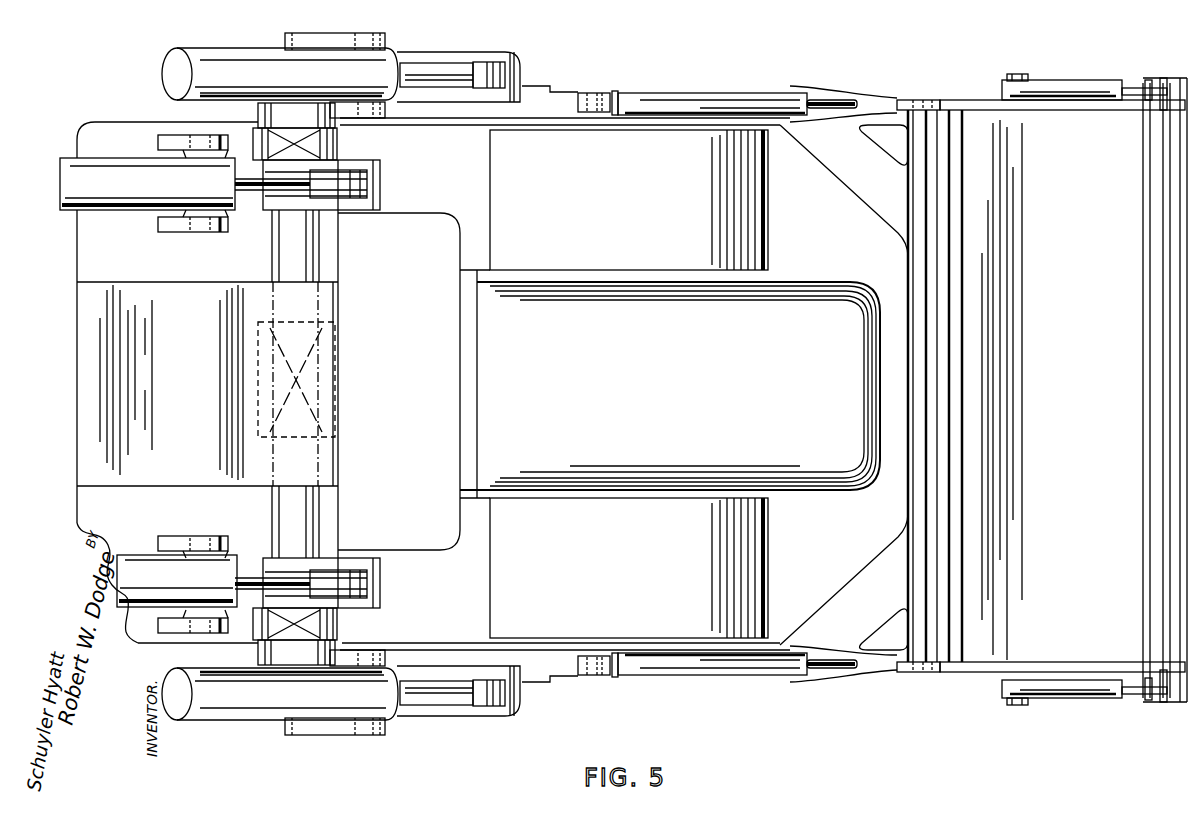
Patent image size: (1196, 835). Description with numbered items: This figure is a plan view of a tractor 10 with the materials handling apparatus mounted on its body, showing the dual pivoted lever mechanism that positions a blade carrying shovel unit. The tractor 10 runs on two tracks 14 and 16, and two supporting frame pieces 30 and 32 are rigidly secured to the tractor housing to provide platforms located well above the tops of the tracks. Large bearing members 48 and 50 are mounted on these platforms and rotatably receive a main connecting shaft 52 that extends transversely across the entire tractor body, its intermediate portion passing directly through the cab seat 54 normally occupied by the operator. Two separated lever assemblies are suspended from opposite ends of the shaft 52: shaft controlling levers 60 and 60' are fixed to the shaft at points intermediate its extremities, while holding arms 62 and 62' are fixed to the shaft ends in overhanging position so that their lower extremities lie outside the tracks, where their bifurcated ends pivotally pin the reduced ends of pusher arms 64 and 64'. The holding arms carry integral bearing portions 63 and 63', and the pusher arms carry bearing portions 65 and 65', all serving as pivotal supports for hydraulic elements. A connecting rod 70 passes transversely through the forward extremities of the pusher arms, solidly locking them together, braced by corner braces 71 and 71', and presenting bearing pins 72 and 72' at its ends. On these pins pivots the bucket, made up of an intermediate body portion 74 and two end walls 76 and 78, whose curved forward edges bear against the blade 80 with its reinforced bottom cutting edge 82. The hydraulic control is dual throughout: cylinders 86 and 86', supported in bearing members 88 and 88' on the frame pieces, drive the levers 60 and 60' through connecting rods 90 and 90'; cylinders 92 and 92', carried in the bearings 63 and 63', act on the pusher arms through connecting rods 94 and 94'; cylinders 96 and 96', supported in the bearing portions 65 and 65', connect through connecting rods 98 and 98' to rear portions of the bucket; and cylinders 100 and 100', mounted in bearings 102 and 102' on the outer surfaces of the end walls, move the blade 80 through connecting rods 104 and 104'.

The tractor 10 is at (670, 384).
The track 14 is at (770, 548).
The track 16 is at (770, 254).
The frame piece 30 is at (85, 262).
The frame piece 32 is at (84, 510).
The bearing member 48 is at (338, 146).
The bearing member 50 is at (343, 620).
The main connecting shaft 52 is at (285, 252).
The cab seat 54 is at (185, 283).
The shaft controlling lever 60 is at (323, 564).
The shaft controlling lever 60' is at (337, 185).
The holding arm 62 is at (276, 654).
The holding arm 62' is at (263, 114).
The bearing portion 63 is at (335, 740).
The bearing portion 63' is at (299, 38).
The pusher arm 64 is at (712, 695).
The pusher arm 64' is at (712, 83).
The bearing portion 65 is at (570, 692).
The bearing portion 65' is at (570, 83).
The connecting rod 70 is at (910, 388).
The corner brace 71 is at (844, 581).
The corner brace 71' is at (844, 191).
The bearing pin 72 is at (921, 689).
The bearing pin 72' is at (934, 84).
The intermediate body portion 74 is at (1084, 390).
The end wall 76 is at (1065, 670).
The end wall 78 is at (1040, 110).
The blade 80 is at (1150, 300).
The bottom cutting edge 82 is at (1172, 378).
The hydraulic cylinder 86 is at (177, 558).
The hydraulic cylinder 86' is at (147, 201).
The bearing members 88 is at (193, 563).
The bearing members 88' is at (191, 200).
The connecting rod 90 is at (390, 470).
The connecting rod 90' is at (399, 298).
The hydraulic cylinder 92 is at (280, 705).
The hydraulic cylinder 92' is at (251, 83).
The connecting rod 94 is at (458, 706).
The connecting rod 94' is at (458, 84).
The hydraulic cylinder 96 is at (816, 695).
The hydraulic cylinder 96' is at (823, 80).
The connecting rod 98 is at (843, 687).
The connecting rod 98' is at (848, 85).
The hydraulic cylinder 100 is at (1062, 711).
The hydraulic cylinder 100' is at (1076, 70).
The bearing 102 is at (1006, 723).
The bearing 102' is at (1037, 59).
The connecting rod 104 is at (1139, 698).
The connecting rod 104' is at (1134, 112).